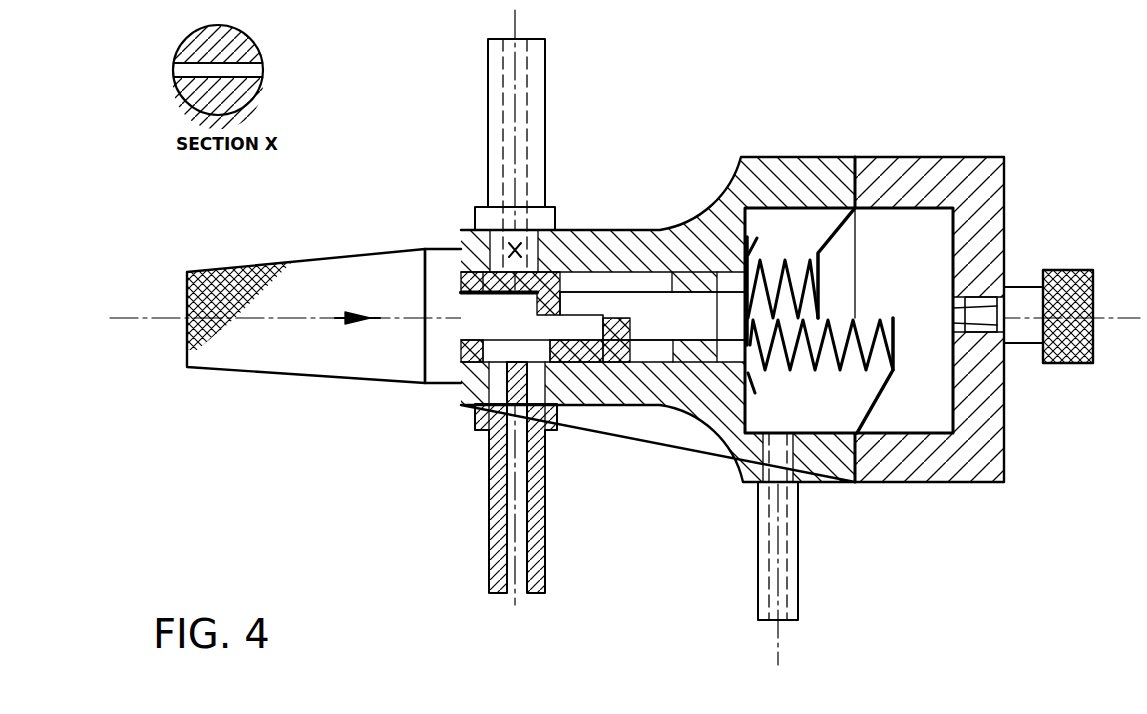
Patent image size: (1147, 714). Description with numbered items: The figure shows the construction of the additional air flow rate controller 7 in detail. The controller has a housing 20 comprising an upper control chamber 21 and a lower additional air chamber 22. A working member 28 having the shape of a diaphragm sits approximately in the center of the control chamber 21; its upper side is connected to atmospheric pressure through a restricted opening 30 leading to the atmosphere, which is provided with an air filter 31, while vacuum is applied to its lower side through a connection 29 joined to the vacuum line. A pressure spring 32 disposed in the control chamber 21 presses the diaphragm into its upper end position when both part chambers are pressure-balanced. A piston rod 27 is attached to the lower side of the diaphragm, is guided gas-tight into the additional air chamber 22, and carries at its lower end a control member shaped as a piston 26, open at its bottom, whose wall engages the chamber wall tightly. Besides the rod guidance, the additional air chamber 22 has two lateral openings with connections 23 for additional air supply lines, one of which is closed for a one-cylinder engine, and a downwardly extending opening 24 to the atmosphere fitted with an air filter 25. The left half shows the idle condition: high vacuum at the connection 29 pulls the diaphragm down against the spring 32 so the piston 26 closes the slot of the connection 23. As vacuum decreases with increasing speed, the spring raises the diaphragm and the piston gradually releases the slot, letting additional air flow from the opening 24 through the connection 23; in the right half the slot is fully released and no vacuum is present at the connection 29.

The additional air flow rate controller 7 is at (975, 163).
The housing 20 is at (635, 385).
The control chamber 21 is at (892, 230).
The additional air chamber 22 is at (562, 347).
The connection 23 is at (517, 563).
The downwardly extending opening 24 is at (460, 330).
The air filter 25 is at (300, 347).
The piston 26 is at (550, 283).
The piston rod 27 is at (648, 297).
The working member 28 is at (827, 240).
The connection 29 is at (766, 514).
The opening 30 is at (990, 312).
The air filter 31 is at (1093, 282).
The pressure spring 32 is at (898, 352).